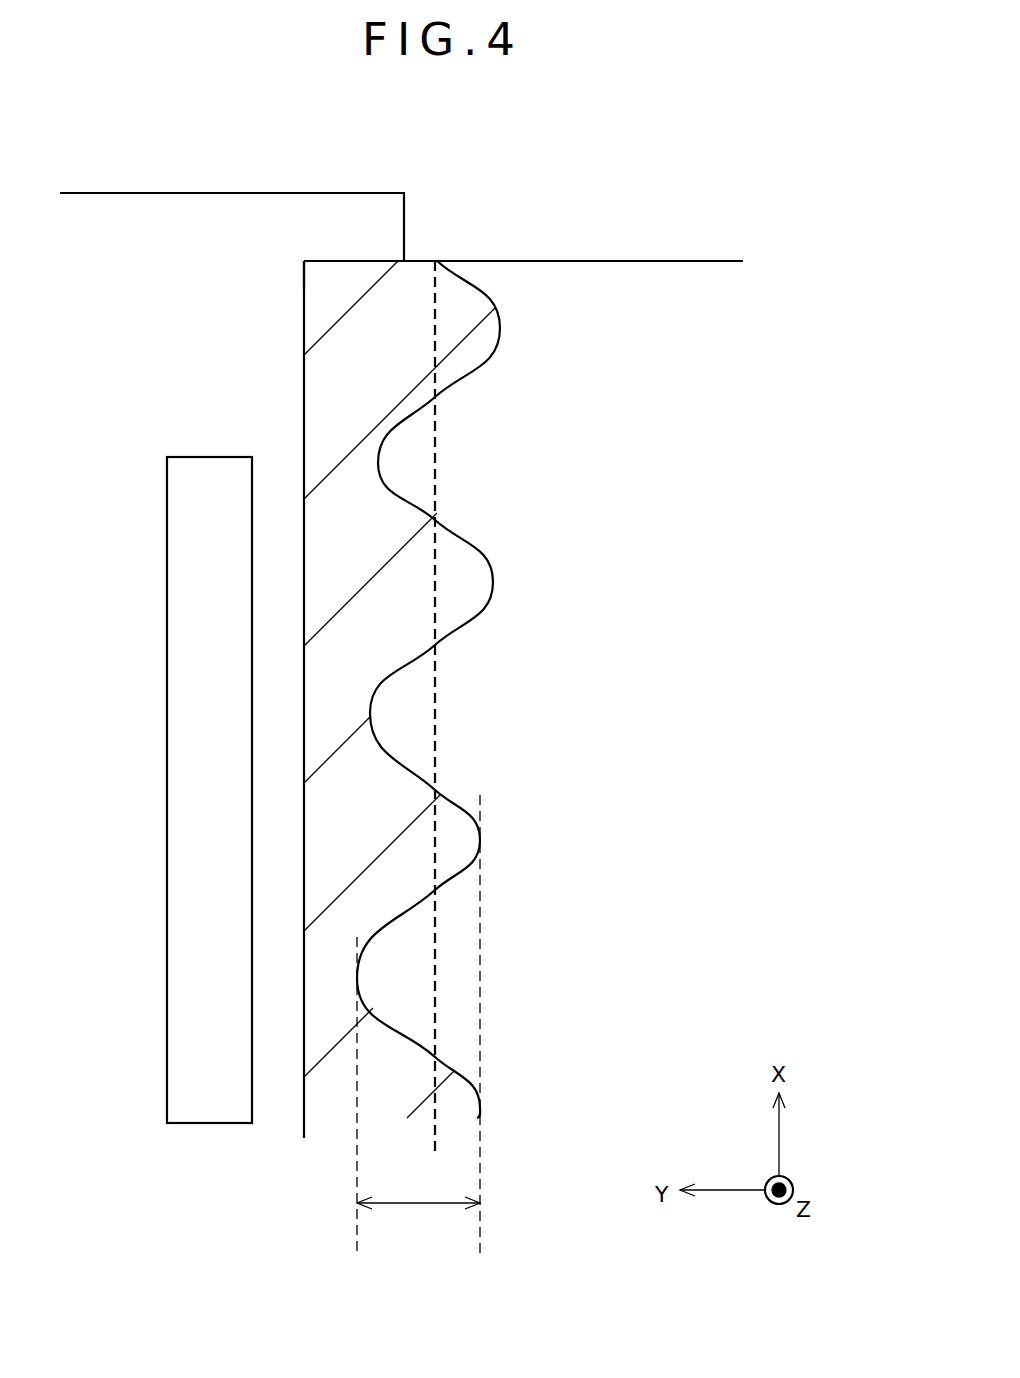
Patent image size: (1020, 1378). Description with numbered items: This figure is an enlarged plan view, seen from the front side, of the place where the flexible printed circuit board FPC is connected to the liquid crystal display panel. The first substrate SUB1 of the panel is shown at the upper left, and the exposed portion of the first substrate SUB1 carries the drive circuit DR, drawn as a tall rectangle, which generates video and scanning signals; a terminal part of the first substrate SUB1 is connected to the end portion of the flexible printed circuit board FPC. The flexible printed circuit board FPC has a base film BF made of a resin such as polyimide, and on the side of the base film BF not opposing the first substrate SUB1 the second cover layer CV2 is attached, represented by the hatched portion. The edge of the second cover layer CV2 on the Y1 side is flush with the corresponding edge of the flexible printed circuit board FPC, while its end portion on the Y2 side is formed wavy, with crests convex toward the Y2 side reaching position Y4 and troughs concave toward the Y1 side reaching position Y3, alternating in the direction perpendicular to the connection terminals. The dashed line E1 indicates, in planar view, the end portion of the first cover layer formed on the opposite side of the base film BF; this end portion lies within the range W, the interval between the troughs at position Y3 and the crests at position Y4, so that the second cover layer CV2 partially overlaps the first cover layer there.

The first substrate SUB1 is at (210, 218).
The flexible printed circuit board FPC is at (599, 247).
The base film BF is at (648, 293).
The second cover layer CV2 is at (318, 1098).
The end portion of the cover layer CV1 E1 is at (437, 463).
The drive circuit DR is at (178, 747).
The Y1 side Y1 is at (297, 254).
The Y2 side Y2 is at (466, 688).
The position Y3 is at (356, 1112).
The position Y4 is at (479, 1041).
The range W is at (418, 1217).